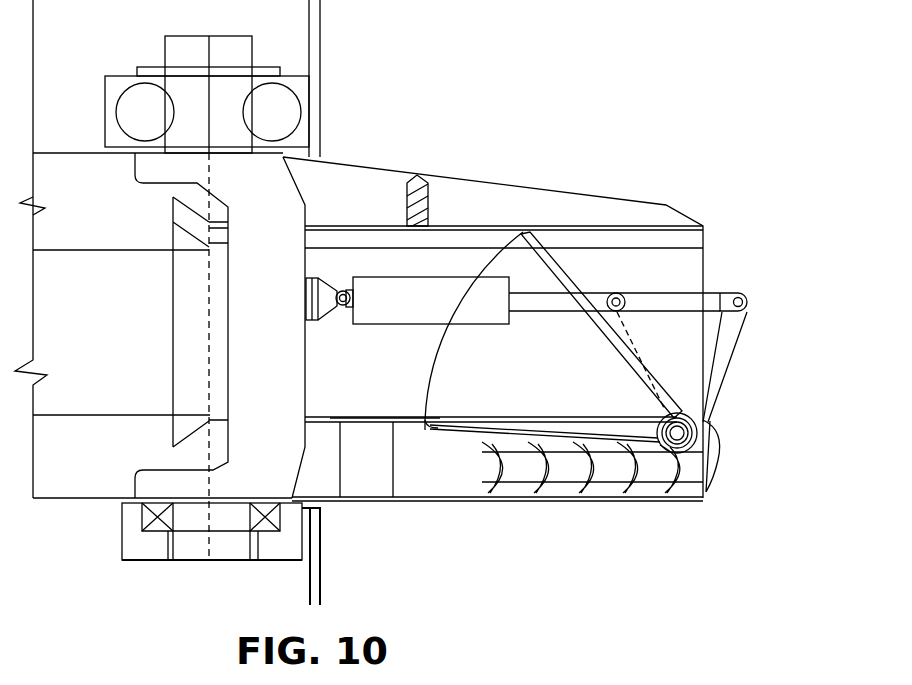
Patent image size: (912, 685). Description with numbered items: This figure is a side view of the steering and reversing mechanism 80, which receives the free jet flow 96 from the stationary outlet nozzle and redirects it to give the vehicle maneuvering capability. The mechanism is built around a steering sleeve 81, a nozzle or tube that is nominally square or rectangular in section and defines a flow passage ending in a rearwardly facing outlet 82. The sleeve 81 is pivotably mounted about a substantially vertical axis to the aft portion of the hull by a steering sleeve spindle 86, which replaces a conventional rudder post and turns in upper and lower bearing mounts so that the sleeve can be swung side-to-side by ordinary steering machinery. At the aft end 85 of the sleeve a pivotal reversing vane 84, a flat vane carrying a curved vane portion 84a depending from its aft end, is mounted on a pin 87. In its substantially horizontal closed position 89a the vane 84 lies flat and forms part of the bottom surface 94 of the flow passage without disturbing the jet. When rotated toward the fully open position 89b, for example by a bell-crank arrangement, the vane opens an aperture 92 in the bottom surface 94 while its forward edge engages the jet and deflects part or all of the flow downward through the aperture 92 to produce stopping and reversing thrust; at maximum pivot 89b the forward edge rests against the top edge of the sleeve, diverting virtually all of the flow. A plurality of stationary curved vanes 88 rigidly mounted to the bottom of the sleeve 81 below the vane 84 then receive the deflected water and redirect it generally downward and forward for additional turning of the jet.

The steering and reversing mechanism 80 is at (586, 138).
The steering sleeve 81 is at (615, 228).
The rearwardly facing outlet 82 is at (703, 268).
The pivotal reversing vane 84 is at (590, 420).
The curved vane portion 84a is at (716, 448).
The aft end 85 is at (722, 208).
The steering sleeve spindle 86 is at (209, 60).
The pin 87 is at (677, 433).
The stationary curved vanes 88 is at (560, 520).
The closed position 89a is at (469, 393).
The fully open position 89b is at (584, 276).
The aperture 92 is at (453, 449).
The bottom surface 94 is at (383, 420).
The flow 96 is at (114, 276).